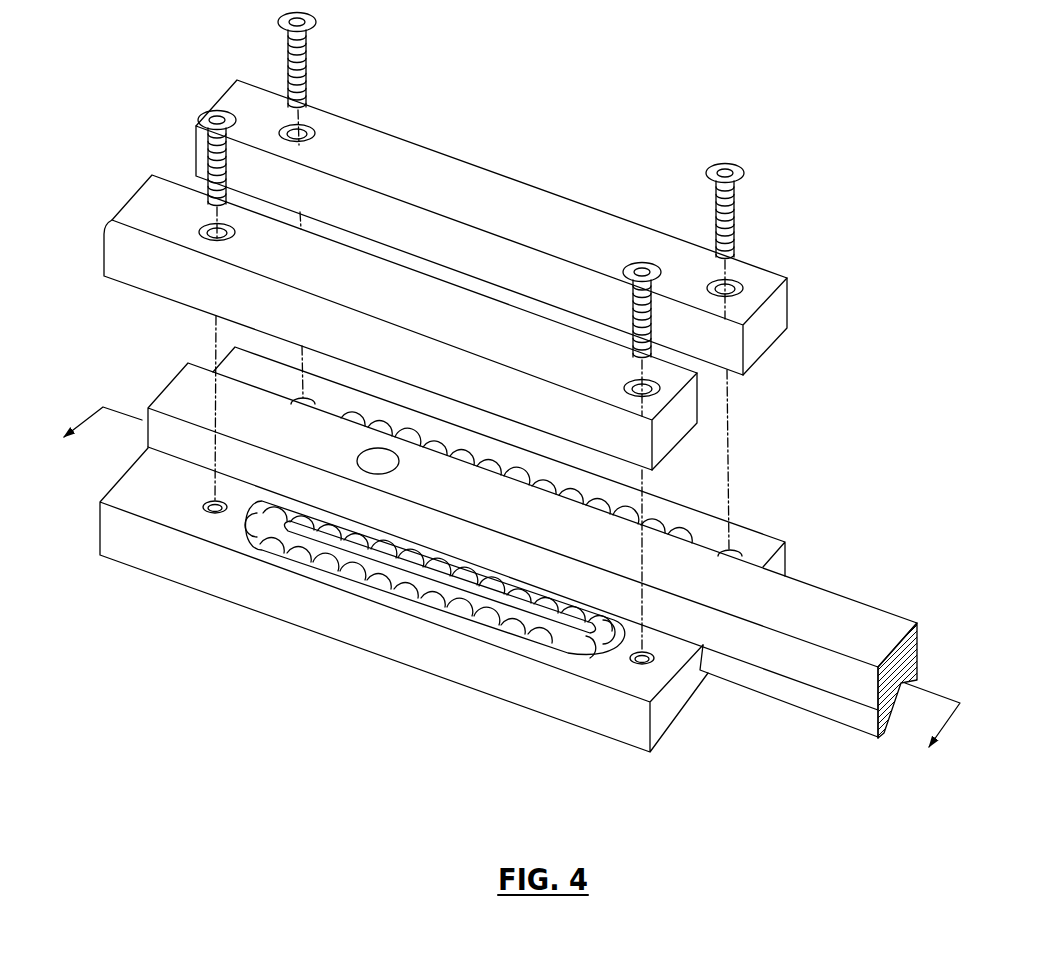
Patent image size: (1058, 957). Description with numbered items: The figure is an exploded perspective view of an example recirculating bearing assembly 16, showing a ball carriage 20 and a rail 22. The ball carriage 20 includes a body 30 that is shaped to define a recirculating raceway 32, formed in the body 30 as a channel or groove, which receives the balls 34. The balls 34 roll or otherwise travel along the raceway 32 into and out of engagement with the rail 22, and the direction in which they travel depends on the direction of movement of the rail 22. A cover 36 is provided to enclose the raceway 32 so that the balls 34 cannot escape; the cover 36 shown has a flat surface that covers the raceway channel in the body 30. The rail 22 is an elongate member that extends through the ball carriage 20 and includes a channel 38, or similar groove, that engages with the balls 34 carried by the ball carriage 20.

The linear slide assembly 16 is at (266, 654).
The ball carriage 20 is at (379, 634).
The rail 22 is at (850, 610).
The body 30 is at (403, 647).
The recirculating raceway 32 is at (513, 632).
The balls 34 is at (558, 640).
The cover 36 is at (130, 203).
The channel 38 is at (796, 690).